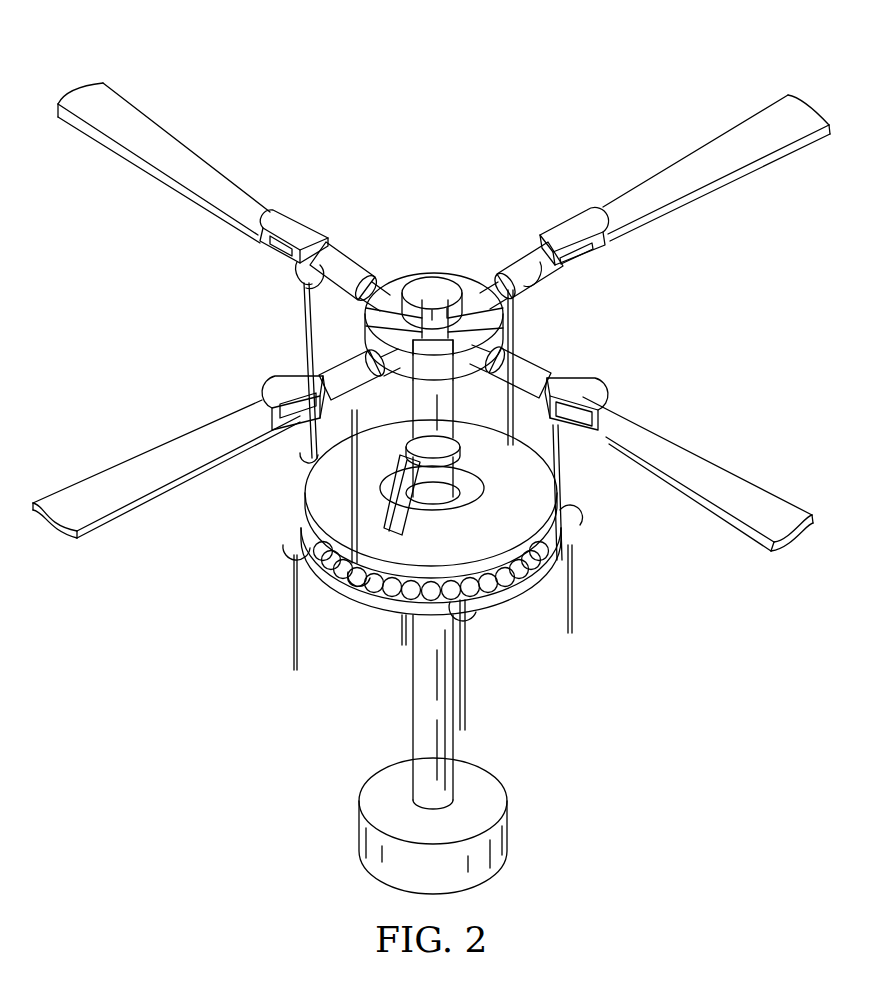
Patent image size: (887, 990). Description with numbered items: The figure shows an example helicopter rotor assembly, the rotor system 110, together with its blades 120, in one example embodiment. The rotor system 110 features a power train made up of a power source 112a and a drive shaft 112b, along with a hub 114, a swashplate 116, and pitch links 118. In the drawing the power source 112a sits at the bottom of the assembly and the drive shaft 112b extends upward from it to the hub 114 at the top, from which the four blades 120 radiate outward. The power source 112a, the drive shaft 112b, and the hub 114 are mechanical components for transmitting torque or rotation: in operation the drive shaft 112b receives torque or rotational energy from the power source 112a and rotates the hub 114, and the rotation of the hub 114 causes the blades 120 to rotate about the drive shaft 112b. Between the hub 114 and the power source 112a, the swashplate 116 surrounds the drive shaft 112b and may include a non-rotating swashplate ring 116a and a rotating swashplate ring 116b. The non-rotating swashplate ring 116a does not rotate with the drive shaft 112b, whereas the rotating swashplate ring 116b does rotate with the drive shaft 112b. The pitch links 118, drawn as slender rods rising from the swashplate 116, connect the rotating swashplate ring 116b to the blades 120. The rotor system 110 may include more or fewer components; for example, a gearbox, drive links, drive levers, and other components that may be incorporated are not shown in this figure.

The rotor system 110 is at (484, 84).
The power source 112a is at (510, 830).
The drive shaft 112b is at (413, 712).
The hub 114 is at (389, 276).
The swashplate 116 is at (591, 486).
The non-rotating swashplate ring 116a is at (500, 608).
The rotating swashplate ring 116b is at (320, 482).
The pitch links 118 is at (303, 328).
The blades 120 is at (191, 155).